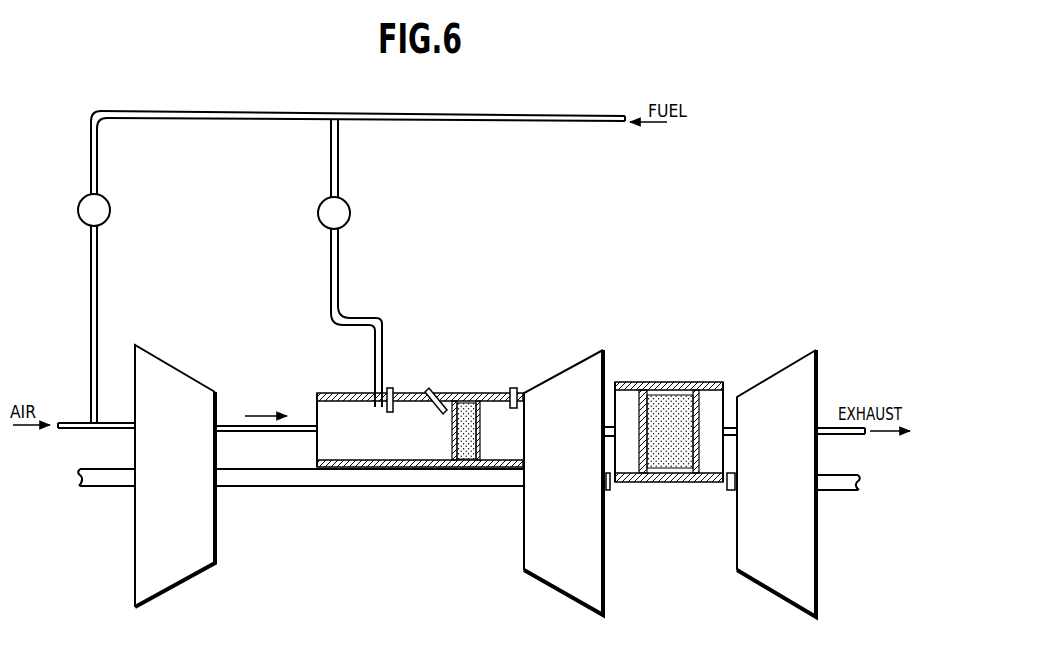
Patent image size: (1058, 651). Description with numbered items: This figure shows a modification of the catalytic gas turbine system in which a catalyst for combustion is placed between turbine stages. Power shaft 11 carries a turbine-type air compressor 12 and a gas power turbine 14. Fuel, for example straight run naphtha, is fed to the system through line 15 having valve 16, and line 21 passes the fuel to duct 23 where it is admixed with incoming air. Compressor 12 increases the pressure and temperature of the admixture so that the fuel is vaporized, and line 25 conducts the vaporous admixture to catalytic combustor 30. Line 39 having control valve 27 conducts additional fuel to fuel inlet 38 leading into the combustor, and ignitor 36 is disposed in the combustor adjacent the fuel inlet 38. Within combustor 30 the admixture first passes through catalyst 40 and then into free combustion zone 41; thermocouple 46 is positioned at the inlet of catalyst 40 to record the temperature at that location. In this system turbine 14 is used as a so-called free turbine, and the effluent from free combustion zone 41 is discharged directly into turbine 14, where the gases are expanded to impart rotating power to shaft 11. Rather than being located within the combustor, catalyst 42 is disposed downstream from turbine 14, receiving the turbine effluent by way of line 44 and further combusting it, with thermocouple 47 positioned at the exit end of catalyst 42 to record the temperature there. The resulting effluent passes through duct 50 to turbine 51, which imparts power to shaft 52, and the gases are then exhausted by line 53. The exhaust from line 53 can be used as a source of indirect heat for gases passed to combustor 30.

The power shaft 11 is at (398, 487).
The turbine-type air compressor 12 is at (212, 553).
The gas power turbine 14 is at (524, 562).
The line 15 is at (531, 122).
The valve 16 is at (110, 210).
The line 21 is at (98, 290).
The duct 23 is at (84, 429).
The line 25 is at (265, 433).
The control valve 27 is at (350, 213).
The catalytic combustor 30 is at (336, 392).
The ignitor 36 is at (397, 392).
The fuel inlet 38 is at (383, 339).
The line 39 is at (339, 159).
The catalyst 40 is at (479, 435).
The free combustion zone 41 is at (497, 455).
The catalyst 42 is at (667, 396).
The line 44 is at (611, 427).
The thermocouple 46 is at (432, 390).
The thermocouple 47 is at (511, 388).
The duct 50 is at (738, 425).
The turbine 51 is at (736, 568).
The shaft 52 is at (845, 492).
The line 53 is at (832, 436).